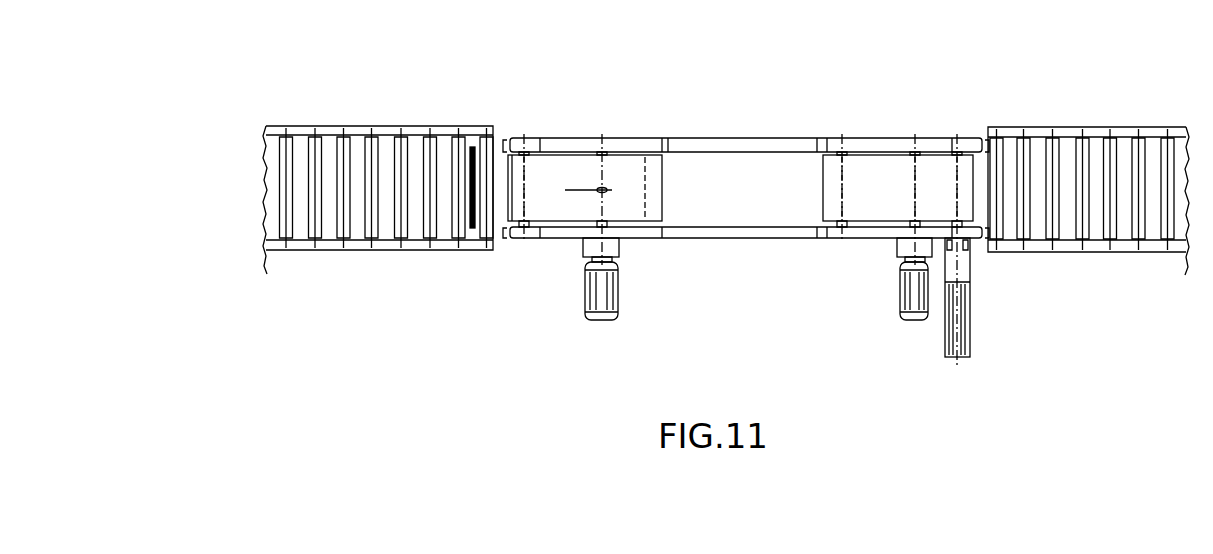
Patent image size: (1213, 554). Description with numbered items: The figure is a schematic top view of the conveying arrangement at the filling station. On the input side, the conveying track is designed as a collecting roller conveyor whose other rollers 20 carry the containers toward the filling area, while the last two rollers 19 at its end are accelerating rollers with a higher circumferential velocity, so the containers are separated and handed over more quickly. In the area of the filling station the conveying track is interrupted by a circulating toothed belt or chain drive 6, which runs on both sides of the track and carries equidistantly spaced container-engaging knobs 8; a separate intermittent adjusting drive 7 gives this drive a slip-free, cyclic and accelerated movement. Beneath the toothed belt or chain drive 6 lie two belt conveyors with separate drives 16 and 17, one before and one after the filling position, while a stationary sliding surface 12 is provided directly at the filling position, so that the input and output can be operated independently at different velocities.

The toothed belt or chain drive 6 is at (722, 142).
The intermittent adjusting drive 7 is at (968, 325).
The container-engaging knobs 8 is at (663, 142).
The stationary sliding surface 12 is at (755, 185).
The separate drive 16 is at (593, 305).
The separate drive 17 is at (910, 303).
The rollers 19 is at (485, 235).
The other rollers 20 is at (378, 234).